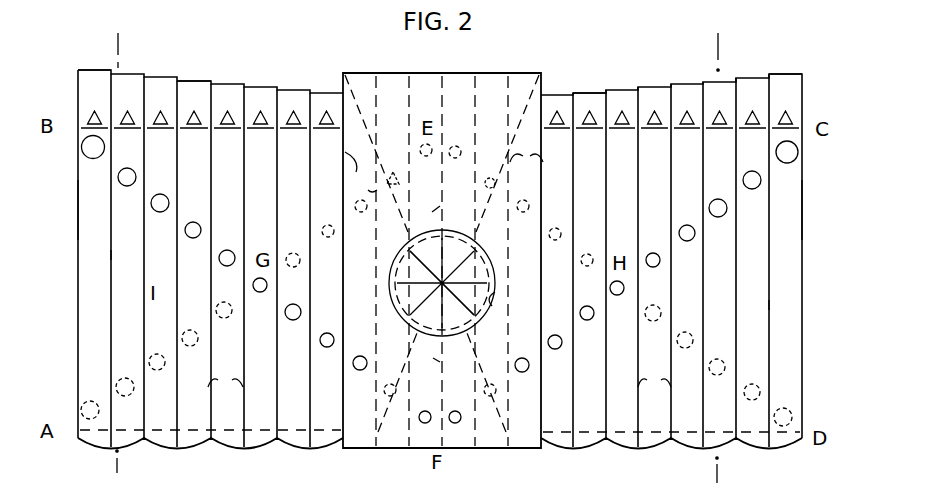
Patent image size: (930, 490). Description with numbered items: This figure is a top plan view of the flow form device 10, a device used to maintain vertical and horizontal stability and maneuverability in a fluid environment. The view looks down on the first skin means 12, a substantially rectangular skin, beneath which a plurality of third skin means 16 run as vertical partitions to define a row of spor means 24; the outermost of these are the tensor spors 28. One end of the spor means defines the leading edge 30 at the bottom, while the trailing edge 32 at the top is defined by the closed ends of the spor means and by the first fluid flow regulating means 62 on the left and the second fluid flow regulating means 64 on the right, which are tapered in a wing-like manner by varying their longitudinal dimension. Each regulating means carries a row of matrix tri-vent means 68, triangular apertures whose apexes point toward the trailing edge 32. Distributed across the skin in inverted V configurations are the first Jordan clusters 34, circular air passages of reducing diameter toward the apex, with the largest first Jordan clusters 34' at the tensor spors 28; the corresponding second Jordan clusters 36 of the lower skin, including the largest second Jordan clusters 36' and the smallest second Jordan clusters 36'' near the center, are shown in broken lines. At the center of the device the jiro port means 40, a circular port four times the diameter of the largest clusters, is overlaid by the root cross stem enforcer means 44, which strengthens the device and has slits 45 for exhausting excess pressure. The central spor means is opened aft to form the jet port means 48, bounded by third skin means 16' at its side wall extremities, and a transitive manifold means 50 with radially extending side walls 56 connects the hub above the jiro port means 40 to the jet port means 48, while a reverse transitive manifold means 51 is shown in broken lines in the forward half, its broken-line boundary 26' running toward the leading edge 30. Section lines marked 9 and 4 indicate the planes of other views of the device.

The flow form device 10 is at (167, 45).
The first skin means 12 is at (270, 200).
The third skin means 16 is at (439, 396).
The third skin means defining side wall extremities of jet port means 16' is at (444, 175).
The spor means 24 is at (164, 245).
The fold line 26' is at (440, 408).
The tensor spors 28 is at (92, 186).
The leading edge 30 is at (182, 449).
The trailing edge 32 is at (257, 88).
The first Jordan clusters 34 is at (439, 273).
The largest first Jordan clusters 34' is at (435, 309).
The second Jordan clusters 36 is at (438, 300).
The largest second Jordan clusters 36' is at (435, 409).
The smallest second Jordan clusters 36'' is at (437, 171).
The jiro port means 40 is at (493, 292).
The root cross stem enforcer means 44 is at (402, 296).
The slits 45 is at (493, 267).
The jet port means 48 is at (395, 92).
The transitive manifold means 50 is at (433, 211).
The reverse transitive manifold means 51 is at (434, 359).
The side walls 56 is at (368, 126).
The first fluid flow regulating means 62 is at (190, 74).
The second fluid flow regulating means 64 is at (597, 82).
The matrix tri-vent means 68 is at (262, 133).
The section line 9- 9 is at (118, 33).
The section line 4- 4 is at (718, 33).